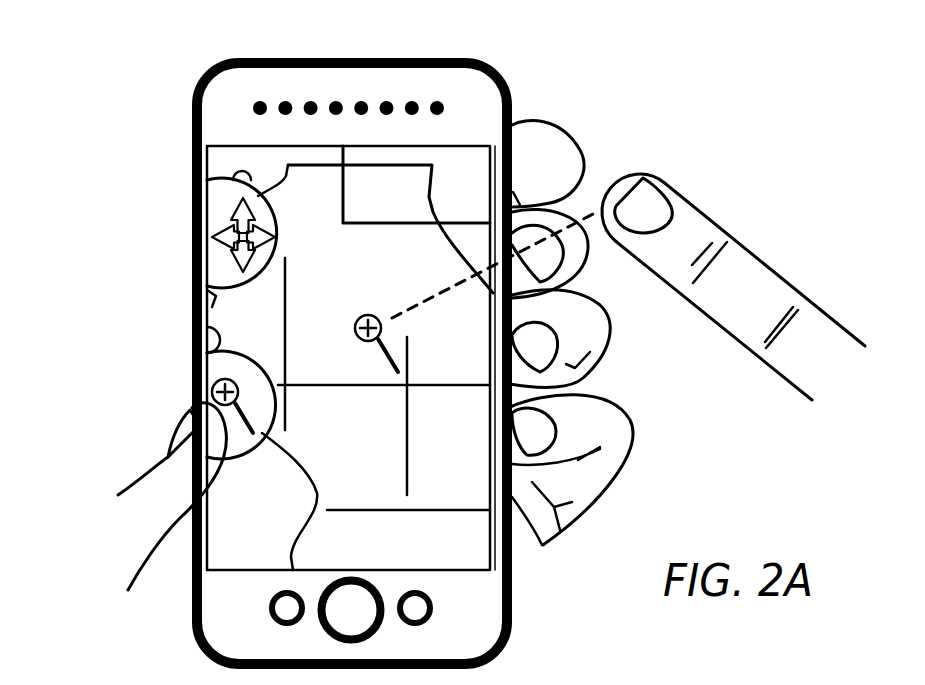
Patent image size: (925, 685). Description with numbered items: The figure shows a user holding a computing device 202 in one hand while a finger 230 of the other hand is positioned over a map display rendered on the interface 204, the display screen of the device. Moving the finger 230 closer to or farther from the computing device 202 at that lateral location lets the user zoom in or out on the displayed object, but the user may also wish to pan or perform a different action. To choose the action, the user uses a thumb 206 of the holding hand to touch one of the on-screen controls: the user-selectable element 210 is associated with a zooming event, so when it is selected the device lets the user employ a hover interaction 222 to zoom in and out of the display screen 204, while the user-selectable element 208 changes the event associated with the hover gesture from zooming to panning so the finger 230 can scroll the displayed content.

The computing device 202 is at (194, 87).
The interface 204 is at (395, 203).
The thumb 206 is at (172, 478).
The user-selectable element 208 is at (233, 205).
The user-selectable element 210 is at (195, 352).
The hover interaction 222 is at (447, 293).
The finger 230 is at (733, 283).